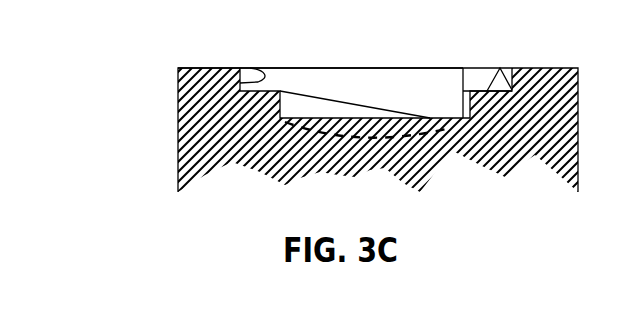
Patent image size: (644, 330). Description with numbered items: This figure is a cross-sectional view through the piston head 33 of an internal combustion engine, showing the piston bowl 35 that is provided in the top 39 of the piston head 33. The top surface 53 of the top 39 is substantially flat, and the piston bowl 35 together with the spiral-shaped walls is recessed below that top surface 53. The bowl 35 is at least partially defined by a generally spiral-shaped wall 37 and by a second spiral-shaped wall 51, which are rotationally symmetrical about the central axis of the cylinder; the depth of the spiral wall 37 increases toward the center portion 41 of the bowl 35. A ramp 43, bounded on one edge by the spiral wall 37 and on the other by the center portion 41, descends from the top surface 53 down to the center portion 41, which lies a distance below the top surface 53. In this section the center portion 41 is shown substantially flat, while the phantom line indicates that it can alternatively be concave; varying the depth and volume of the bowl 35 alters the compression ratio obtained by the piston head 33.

The piston head 33 is at (192, 101).
The top surface 53 is at (192, 66).
The second wall 51 is at (250, 68).
The top 39 is at (270, 68).
The piston bowl 35 is at (370, 81).
The center portion 41 is at (317, 118).
The ramp 43 is at (485, 90).
The wall 37 is at (507, 86).